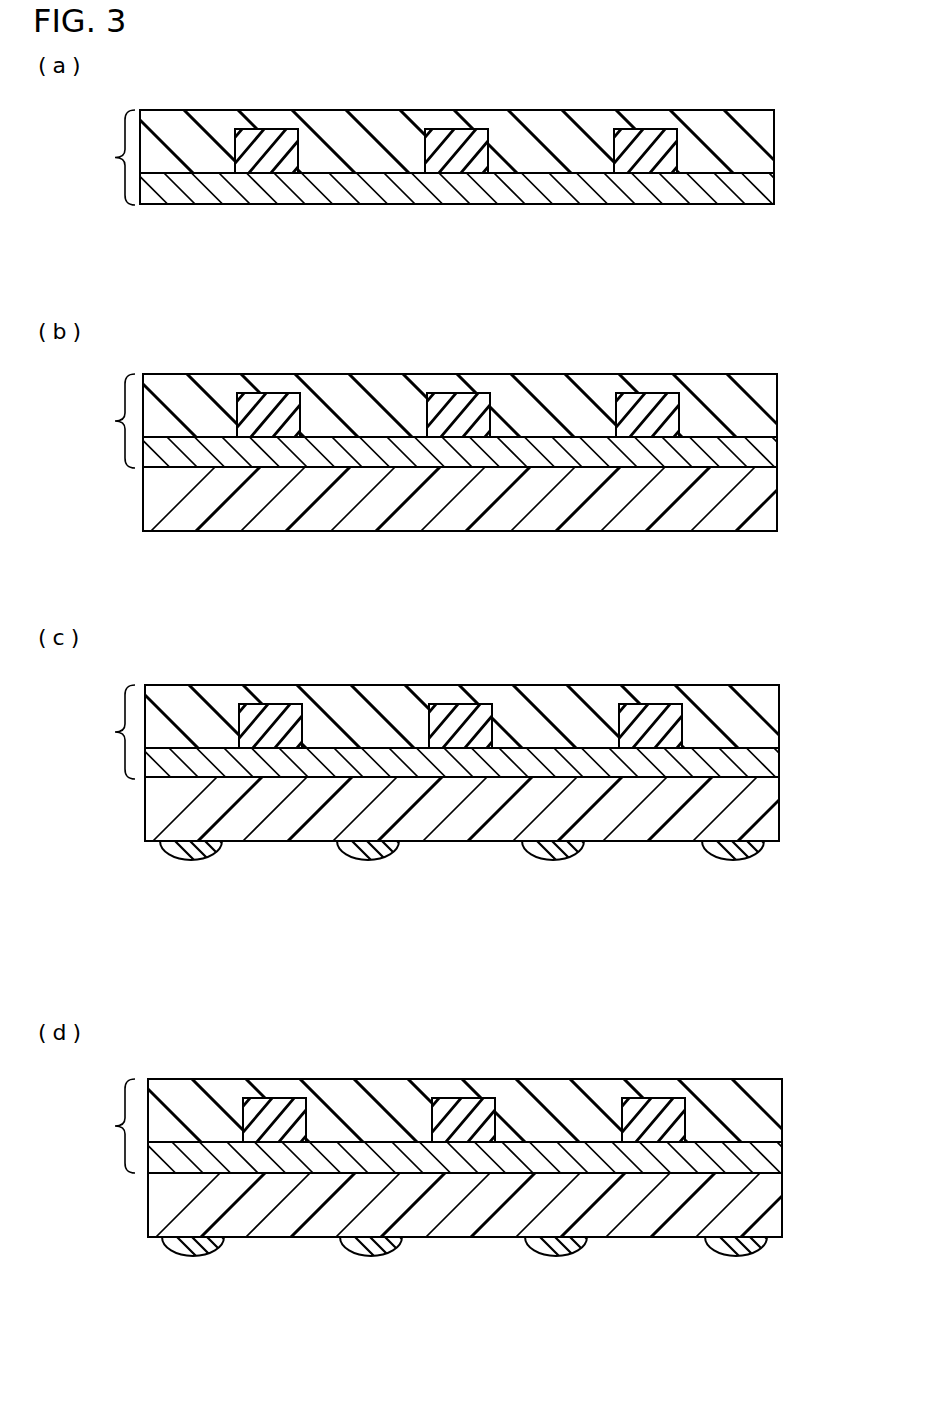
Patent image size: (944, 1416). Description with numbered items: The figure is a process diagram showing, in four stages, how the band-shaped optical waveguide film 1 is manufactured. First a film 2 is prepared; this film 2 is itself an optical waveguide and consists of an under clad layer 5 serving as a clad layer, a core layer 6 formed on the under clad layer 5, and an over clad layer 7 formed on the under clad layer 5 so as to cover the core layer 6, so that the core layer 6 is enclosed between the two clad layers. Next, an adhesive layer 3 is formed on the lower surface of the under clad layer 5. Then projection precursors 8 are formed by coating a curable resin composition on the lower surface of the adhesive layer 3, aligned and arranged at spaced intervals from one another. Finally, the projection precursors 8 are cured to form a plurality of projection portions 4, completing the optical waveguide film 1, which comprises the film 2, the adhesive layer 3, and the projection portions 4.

The optical waveguide film 1 is at (455, 1360).
The film 2 is at (112, 641).
The adhesive layer 3 is at (777, 500).
The projection portions 4 is at (179, 1257).
The under clad layer 5 is at (774, 178).
The core layer 6 is at (267, 129).
The over clad layer 7 is at (774, 127).
The projection precursors 8 is at (177, 861).